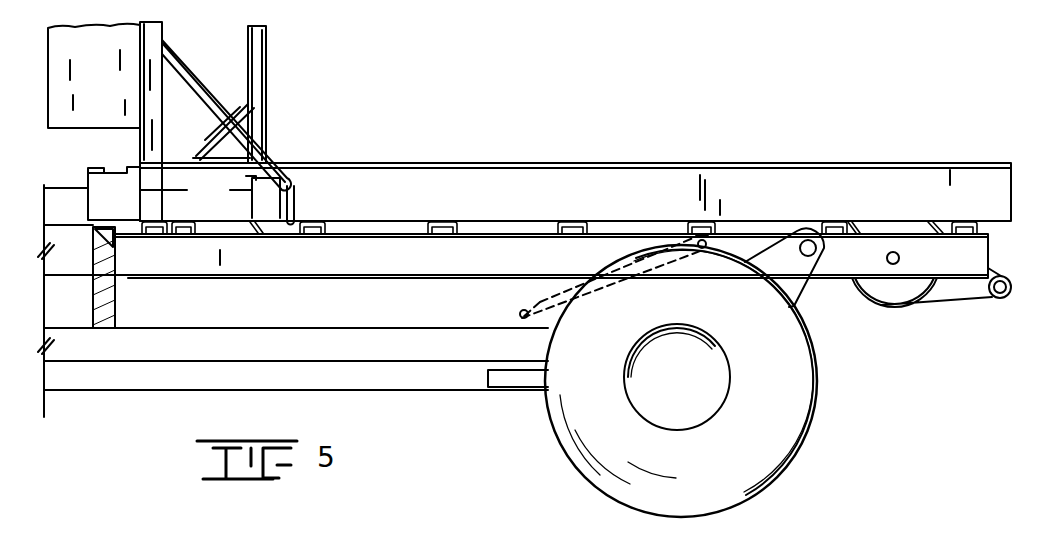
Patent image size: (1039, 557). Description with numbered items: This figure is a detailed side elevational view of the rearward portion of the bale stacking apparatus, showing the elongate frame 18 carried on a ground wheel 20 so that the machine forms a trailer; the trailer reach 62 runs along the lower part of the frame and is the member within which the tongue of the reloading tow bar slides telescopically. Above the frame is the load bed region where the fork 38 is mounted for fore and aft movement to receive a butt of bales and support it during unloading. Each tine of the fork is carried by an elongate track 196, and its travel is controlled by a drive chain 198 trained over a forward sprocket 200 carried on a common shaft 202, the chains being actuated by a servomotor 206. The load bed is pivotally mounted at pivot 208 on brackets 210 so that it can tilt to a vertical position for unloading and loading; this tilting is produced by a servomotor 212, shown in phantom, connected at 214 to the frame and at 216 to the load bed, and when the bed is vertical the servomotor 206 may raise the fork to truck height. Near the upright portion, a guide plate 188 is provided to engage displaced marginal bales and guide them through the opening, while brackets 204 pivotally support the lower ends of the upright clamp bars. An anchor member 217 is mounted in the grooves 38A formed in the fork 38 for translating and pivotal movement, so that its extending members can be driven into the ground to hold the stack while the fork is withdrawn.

The elongate frame 18 is at (77, 306).
The ground wheels 20 is at (817, 383).
The fork 38 is at (266, 70).
The grooves 38A is at (257, 41).
The trailer reach 62 is at (278, 390).
The guide plates 188 is at (110, 78).
The elongate track 196 is at (622, 163).
The drive chain 198 is at (127, 238).
The forward sprockets 200 is at (98, 245).
The common shaft 202 is at (120, 225).
The brackets 204 is at (253, 205).
The servomotor 206 is at (892, 298).
The pivot 208 is at (816, 251).
The brackets 210 is at (805, 293).
The servomotor 212 is at (617, 288).
The connection to frame 214 is at (520, 312).
The connection to load bed 216 is at (704, 250).
The anchor member 217 is at (237, 112).